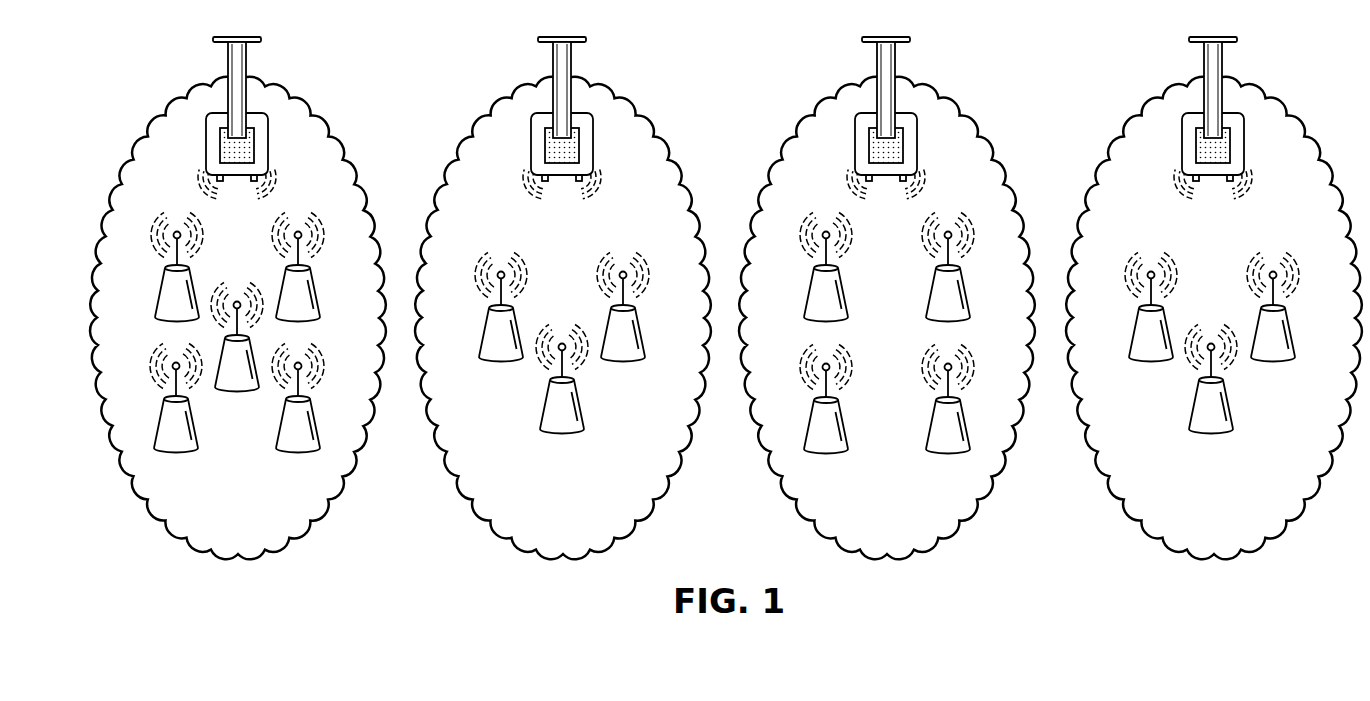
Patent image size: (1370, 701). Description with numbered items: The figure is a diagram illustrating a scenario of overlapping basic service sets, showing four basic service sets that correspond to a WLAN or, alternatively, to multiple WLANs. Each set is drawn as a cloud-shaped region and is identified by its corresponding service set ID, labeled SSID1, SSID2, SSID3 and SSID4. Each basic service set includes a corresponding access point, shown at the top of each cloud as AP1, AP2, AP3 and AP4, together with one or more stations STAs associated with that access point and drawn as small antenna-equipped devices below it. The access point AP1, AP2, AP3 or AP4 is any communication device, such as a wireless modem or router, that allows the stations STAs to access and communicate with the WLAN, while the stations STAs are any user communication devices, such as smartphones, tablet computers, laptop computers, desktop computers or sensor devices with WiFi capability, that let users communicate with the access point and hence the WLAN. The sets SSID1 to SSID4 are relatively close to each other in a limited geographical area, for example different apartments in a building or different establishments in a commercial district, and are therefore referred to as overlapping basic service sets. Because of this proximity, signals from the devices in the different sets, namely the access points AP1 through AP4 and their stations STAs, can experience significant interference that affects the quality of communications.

The access point AP1 is at (254, 118).
The access point AP2 is at (579, 118).
The access point AP3 is at (903, 118).
The access point AP4 is at (1230, 118).
The service set ID SSID1 is at (238, 318).
The service set ID SSID2 is at (563, 318).
The service set ID SSID3 is at (887, 318).
The service set ID SSID4 is at (1214, 318).
The stations STAs is at (562, 343).